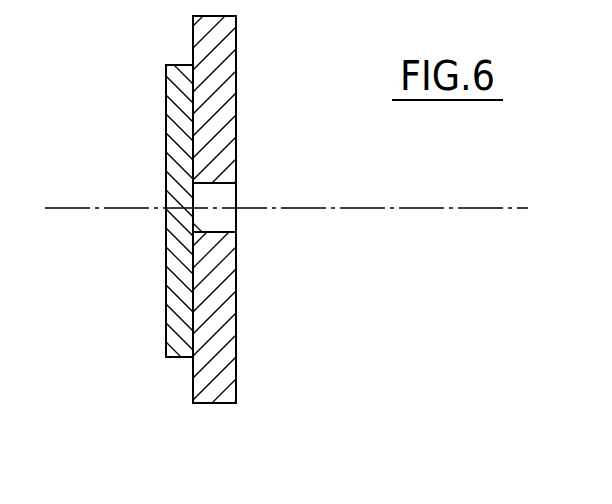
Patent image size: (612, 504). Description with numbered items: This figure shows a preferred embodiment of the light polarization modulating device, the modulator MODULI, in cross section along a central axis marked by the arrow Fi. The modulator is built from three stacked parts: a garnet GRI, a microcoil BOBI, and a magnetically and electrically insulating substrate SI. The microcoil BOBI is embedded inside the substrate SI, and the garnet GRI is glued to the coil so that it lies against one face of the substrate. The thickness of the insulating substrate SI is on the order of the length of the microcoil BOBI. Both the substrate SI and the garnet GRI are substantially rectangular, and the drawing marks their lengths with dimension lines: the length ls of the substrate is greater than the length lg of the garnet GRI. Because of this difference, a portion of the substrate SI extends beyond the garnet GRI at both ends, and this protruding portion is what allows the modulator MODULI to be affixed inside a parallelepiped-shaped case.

The substrate SI is at (231, 363).
The garnet GRI is at (178, 340).
The microcoil BOBI is at (228, 195).
The modulator MODULI is at (186, 392).
The force direction Fi is at (430, 208).
The length of the garnet lg is at (151, 357).
The length of the substrate ls is at (253, 403).